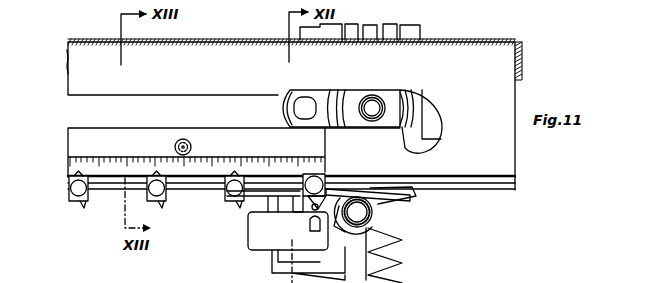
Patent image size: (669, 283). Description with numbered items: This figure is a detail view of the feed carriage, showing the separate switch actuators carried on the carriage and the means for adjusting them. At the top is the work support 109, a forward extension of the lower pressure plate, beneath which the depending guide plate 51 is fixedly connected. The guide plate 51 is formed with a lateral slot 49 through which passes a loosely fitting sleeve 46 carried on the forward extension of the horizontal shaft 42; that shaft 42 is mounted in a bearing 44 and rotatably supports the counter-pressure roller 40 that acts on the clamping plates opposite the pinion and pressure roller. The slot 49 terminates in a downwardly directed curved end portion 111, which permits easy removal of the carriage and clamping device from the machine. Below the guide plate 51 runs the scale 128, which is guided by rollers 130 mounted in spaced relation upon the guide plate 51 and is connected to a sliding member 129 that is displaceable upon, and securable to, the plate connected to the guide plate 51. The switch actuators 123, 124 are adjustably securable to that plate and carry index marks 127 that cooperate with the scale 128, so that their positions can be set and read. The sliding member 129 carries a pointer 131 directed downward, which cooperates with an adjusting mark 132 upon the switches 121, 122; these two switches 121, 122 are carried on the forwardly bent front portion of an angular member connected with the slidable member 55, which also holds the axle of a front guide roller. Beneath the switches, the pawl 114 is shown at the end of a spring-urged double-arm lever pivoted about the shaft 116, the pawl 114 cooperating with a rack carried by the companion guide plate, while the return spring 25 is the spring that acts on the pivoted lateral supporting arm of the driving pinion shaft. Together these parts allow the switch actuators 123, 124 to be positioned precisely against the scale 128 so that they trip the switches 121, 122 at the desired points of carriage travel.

The return spring 25 is at (404, 245).
The counter-pressure roller 40 is at (358, 94).
The horizontal shaft 42 is at (375, 107).
The bearing 44 is at (392, 112).
The sleeve 46 is at (373, 94).
The slot 49 is at (108, 112).
The guide plate 51 is at (492, 155).
The slidable member 55 is at (300, 108).
The work support 109 is at (480, 38).
The curved end portion 111 is at (436, 134).
The pawl 114 is at (405, 193).
The shaft 116 is at (355, 214).
The switch 121 is at (322, 200).
The switch 122 is at (368, 200).
The switch actuator 123 is at (80, 205).
The switch actuator 124 is at (161, 205).
The index mark 127 is at (235, 165).
The scale 128 is at (209, 172).
The sliding member 129 is at (325, 180).
The roller 130 is at (182, 139).
The pointer 131 is at (325, 198).
The adjusting mark 132 is at (316, 231).